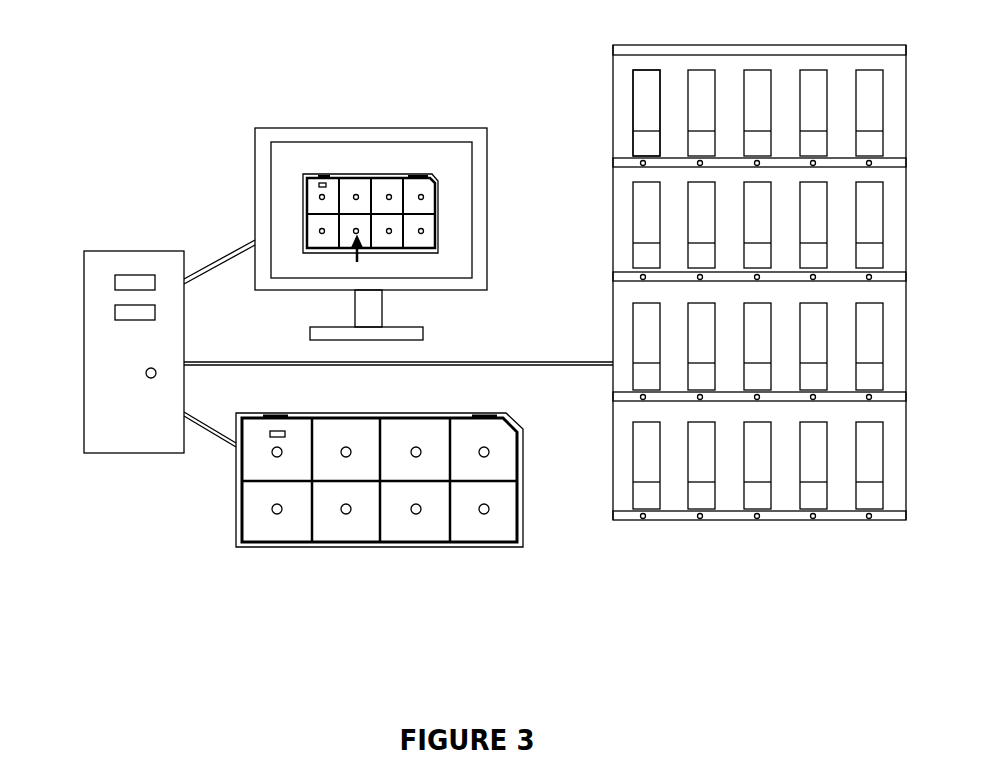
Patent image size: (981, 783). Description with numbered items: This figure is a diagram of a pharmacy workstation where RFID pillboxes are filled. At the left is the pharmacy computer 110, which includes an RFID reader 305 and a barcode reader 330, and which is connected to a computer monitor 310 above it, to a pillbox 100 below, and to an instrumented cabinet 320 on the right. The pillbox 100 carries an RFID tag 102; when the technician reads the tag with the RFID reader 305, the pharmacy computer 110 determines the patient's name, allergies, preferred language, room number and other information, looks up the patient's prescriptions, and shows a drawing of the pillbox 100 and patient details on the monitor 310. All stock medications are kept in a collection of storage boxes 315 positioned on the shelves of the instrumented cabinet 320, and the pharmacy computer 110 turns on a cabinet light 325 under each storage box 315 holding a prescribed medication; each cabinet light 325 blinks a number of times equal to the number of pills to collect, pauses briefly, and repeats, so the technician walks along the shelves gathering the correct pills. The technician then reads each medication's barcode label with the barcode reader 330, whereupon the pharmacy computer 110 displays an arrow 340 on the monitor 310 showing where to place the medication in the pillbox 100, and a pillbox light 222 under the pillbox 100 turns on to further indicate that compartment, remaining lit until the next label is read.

The pillbox 100 is at (492, 547).
The RFID tag 102 is at (285, 432).
The pharmacy computer 110 is at (144, 251).
The pillbox light 222 is at (346, 514).
The RFID reader 305 is at (124, 281).
The barcode reader 330 is at (124, 310).
The computer monitor 310 is at (261, 157).
The arrow 340 is at (360, 259).
The storage box 315 is at (645, 83).
The instrumented cabinet 320 is at (612, 83).
The cabinet light 325 is at (638, 160).